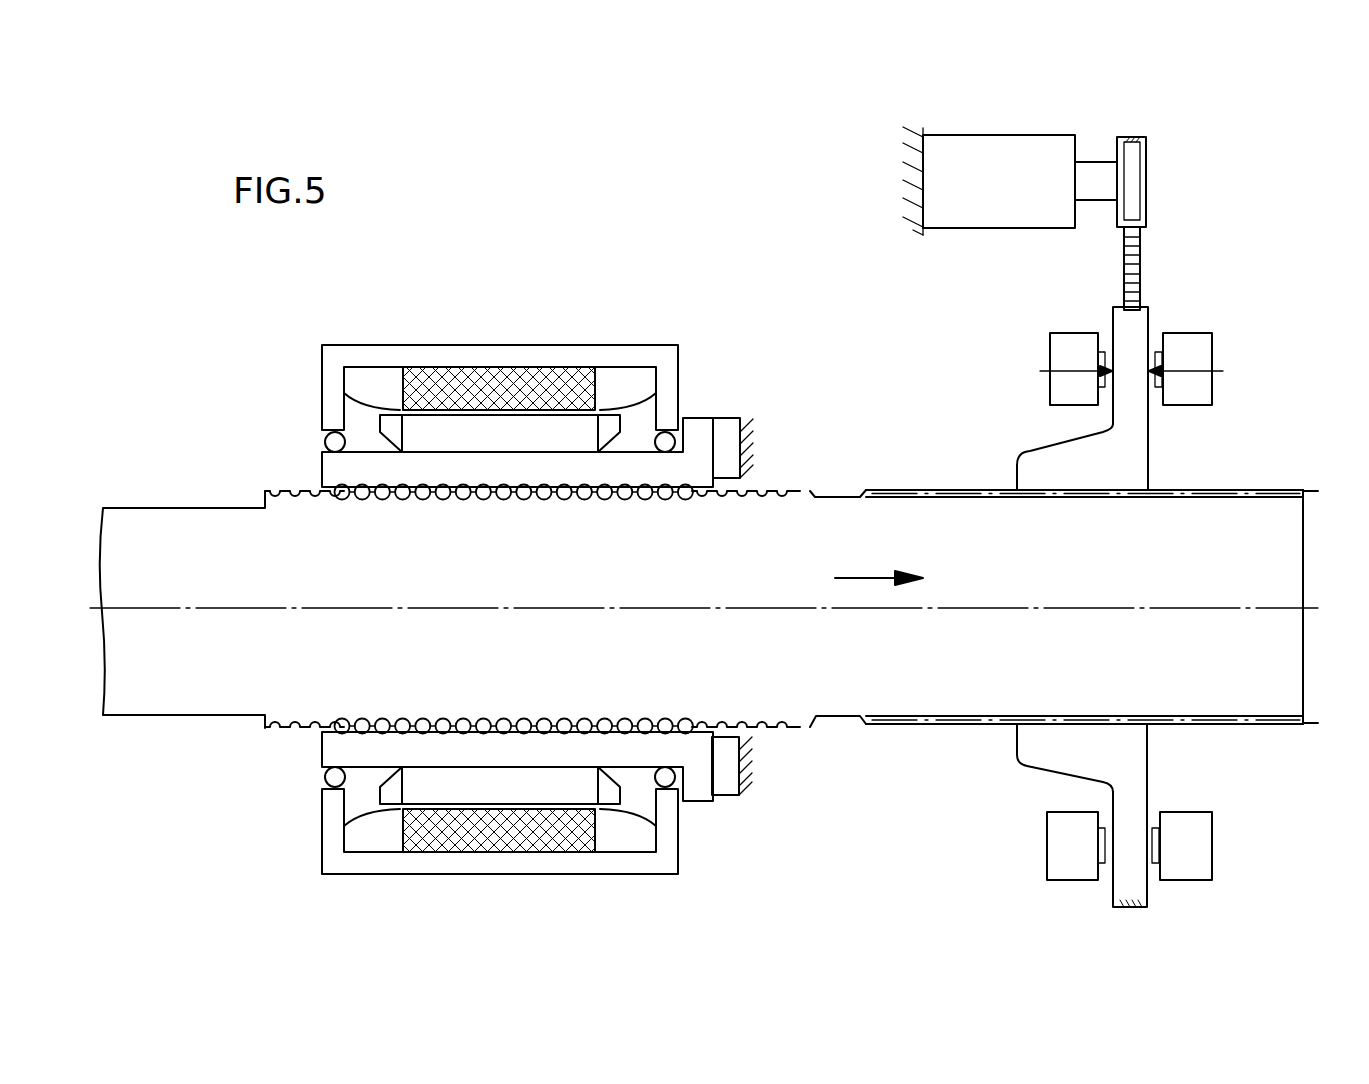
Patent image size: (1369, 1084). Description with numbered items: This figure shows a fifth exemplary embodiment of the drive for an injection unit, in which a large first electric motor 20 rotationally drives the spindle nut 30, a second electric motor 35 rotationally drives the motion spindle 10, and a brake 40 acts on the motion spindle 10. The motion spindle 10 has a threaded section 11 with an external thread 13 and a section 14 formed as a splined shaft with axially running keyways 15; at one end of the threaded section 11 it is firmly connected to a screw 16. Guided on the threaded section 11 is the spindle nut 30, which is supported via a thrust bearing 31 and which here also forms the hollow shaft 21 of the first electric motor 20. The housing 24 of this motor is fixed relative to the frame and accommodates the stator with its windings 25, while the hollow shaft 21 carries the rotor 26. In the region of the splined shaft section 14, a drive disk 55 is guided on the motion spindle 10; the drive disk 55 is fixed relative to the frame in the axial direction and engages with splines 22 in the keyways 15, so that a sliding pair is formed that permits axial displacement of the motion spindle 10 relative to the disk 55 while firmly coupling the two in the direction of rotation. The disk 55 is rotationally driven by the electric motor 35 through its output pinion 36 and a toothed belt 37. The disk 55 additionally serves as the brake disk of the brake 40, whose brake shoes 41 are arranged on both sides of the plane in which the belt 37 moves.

The motion spindle 10 is at (865, 452).
The threaded section 11 is at (675, 635).
The external thread 13 is at (275, 742).
The splined shaft section 14 is at (1213, 555).
The keyways 15 is at (1268, 722).
The screw 16 is at (180, 563).
The first electric motor 20 is at (648, 312).
The hollow shaft 21 is at (630, 753).
The splines 22 is at (1100, 718).
The housing 24 is at (415, 352).
The windings 25 is at (365, 382).
The rotor 26 is at (530, 427).
The spindle nut 30 is at (531, 678).
The thrust bearing 31 is at (728, 433).
The electric motor 35 is at (1004, 160).
The output pinion 36 is at (1137, 192).
The toothed belt 37 is at (1135, 262).
The brake 40 is at (1182, 310).
The brake shoes 41 is at (1098, 383).
The drive disk 55 is at (1043, 745).